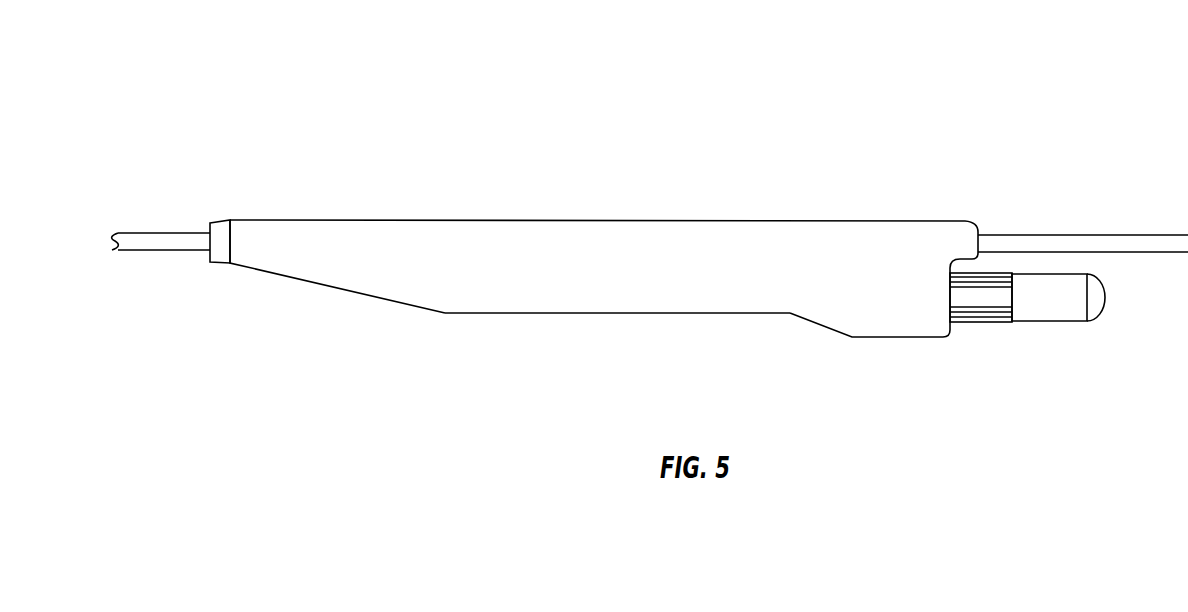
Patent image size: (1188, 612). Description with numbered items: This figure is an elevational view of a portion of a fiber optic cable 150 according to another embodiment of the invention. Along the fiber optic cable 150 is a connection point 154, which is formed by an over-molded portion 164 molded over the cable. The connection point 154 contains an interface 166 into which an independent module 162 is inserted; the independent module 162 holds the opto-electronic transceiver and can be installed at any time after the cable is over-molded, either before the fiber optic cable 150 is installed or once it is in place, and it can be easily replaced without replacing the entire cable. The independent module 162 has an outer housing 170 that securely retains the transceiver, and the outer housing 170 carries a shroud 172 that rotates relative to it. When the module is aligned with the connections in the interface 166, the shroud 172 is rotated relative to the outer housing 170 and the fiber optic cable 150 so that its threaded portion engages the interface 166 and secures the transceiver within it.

The fiber optic cable 150 is at (937, 137).
The connection point 154 is at (682, 212).
The over-molded portion 164 is at (480, 298).
The interface 166 is at (953, 322).
The independent module 162 is at (1058, 321).
The outer housing 170 is at (1102, 292).
The shroud 172 is at (1002, 273).